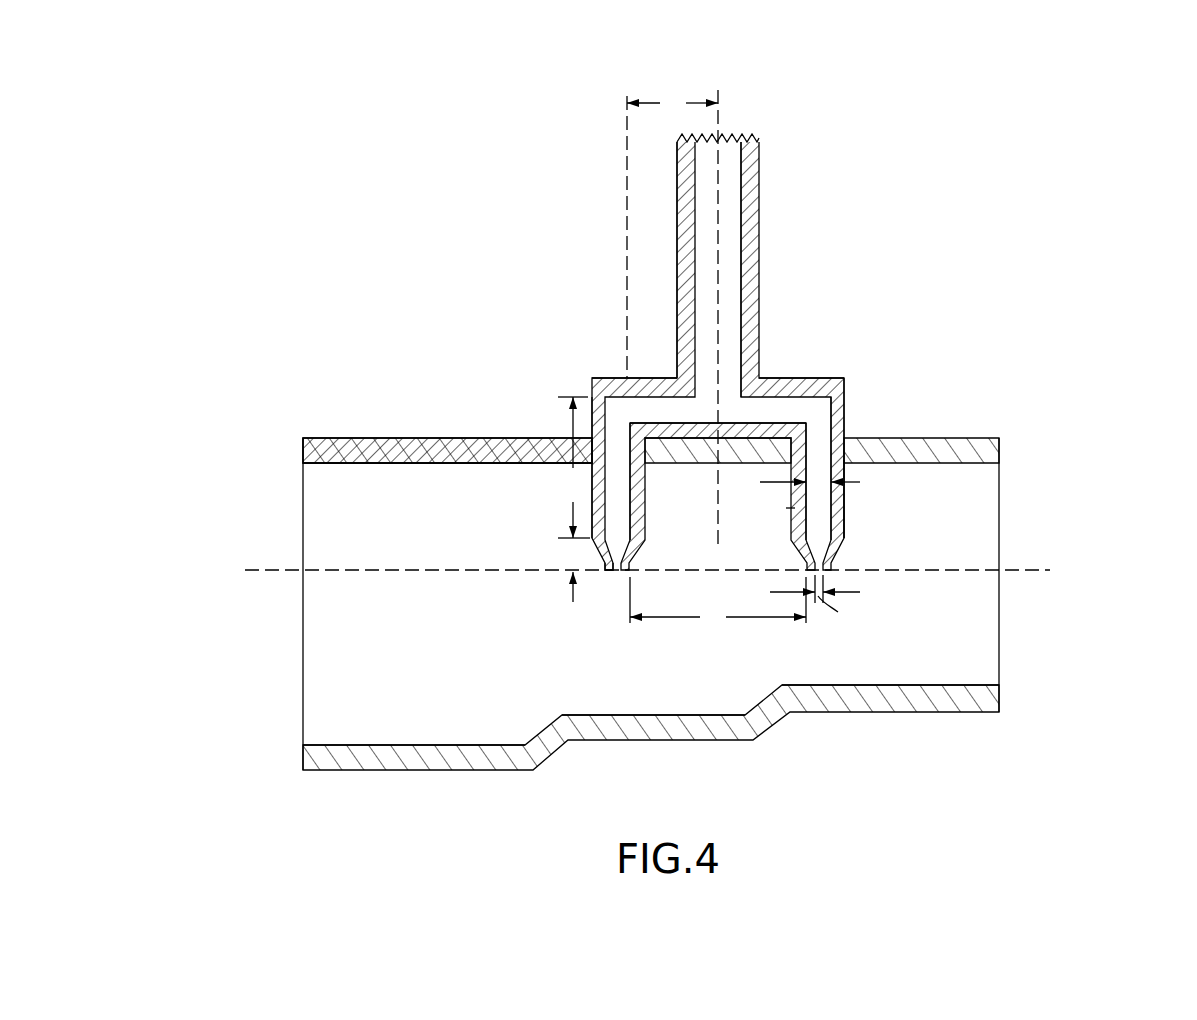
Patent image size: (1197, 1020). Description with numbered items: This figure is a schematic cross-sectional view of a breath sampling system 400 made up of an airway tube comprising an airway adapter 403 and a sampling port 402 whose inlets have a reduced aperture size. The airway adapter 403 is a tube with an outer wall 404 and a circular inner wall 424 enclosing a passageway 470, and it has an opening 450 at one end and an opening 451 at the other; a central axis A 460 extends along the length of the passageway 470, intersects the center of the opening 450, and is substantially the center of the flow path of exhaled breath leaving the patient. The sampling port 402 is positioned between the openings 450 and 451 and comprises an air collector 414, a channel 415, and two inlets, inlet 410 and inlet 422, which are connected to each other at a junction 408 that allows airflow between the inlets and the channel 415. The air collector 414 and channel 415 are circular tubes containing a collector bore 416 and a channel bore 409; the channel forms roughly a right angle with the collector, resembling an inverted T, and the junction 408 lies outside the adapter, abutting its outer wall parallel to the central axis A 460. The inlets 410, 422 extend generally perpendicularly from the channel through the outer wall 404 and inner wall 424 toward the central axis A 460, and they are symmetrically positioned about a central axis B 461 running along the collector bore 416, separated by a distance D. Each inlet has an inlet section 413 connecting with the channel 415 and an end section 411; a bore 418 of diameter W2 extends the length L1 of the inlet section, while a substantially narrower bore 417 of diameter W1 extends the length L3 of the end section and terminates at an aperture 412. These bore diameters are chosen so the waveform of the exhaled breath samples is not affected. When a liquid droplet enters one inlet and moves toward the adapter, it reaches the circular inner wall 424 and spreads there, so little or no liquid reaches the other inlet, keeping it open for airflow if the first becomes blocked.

The breath sampling system 400 is at (1042, 128).
The sampling port 402 is at (622, 203).
The airway adapter 403 is at (460, 380).
The outer wall 404 is at (332, 438).
The junction 408 is at (728, 395).
The channel bore 409 is at (802, 413).
The inlet 410 is at (558, 485).
The end section 411 is at (626, 553).
The aperture 412 is at (612, 578).
The inlet section 413 is at (645, 478).
The air collector 414 is at (677, 185).
The channel 415 is at (652, 378).
The collector bore 416 is at (727, 226).
The bore 417 is at (805, 556).
The bore 418 is at (820, 433).
The inlet 422 is at (845, 490).
The circular inner wall 424 is at (357, 463).
The opening 450 is at (1012, 650).
The opening 451 is at (292, 652).
The central axis A 460 is at (1050, 555).
The central axis B 461 is at (728, 78).
The passageway 470 is at (725, 683).